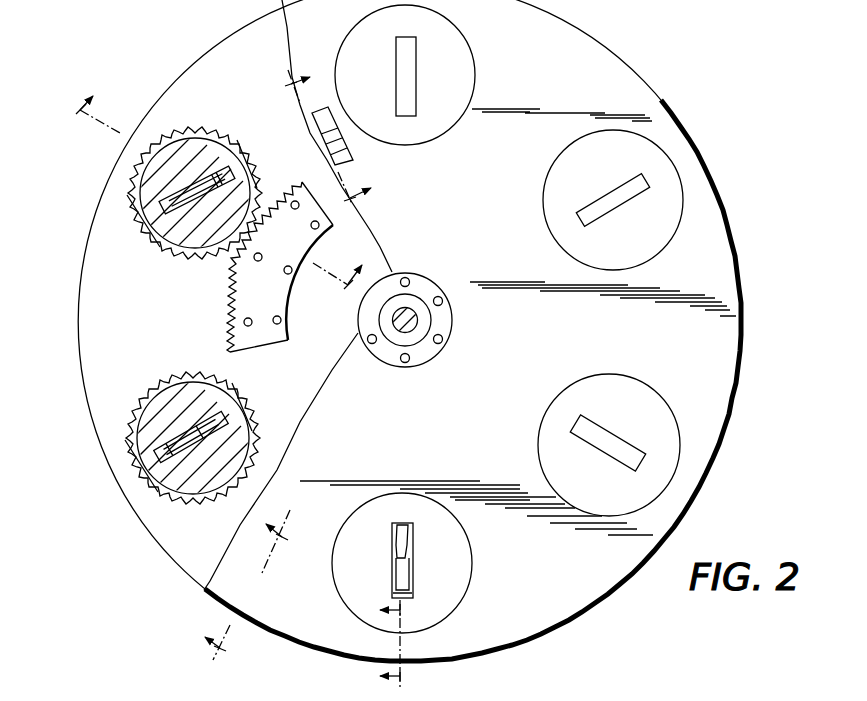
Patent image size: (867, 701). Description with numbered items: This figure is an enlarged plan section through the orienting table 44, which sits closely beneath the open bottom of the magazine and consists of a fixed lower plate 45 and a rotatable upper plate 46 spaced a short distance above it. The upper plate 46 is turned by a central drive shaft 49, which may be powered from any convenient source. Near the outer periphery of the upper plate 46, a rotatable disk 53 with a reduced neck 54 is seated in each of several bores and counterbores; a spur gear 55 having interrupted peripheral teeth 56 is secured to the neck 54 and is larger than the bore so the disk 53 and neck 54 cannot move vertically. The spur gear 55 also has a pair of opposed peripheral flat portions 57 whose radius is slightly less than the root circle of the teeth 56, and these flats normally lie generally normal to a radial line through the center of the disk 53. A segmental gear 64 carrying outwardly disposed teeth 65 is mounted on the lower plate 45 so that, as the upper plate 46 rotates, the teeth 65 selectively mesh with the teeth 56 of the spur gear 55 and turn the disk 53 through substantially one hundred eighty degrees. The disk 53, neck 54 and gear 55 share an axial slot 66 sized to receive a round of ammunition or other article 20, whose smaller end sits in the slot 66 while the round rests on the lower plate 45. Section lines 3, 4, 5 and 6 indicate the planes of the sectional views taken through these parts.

The section line 3- 3 is at (219, 178).
The section line 4- 4 is at (402, 647).
The section line 5- 5 is at (256, 589).
The section line 6- 6 is at (337, 131).
The article 20 is at (405, 575).
The orienting table 44 is at (664, 99).
The lower plate 45 is at (95, 330).
The upper plate 46 is at (580, 30).
The drive shaft 49 is at (418, 320).
The rotatable disk 53 is at (556, 231).
The reduced neck 54 is at (200, 147).
The spur gear 55 is at (174, 262).
The peripheral teeth 56 is at (215, 257).
The peripheral flat portions 57 is at (242, 142).
The segmental gear 64 is at (283, 290).
The teeth 65 is at (232, 302).
The axial slot 66 is at (414, 74).